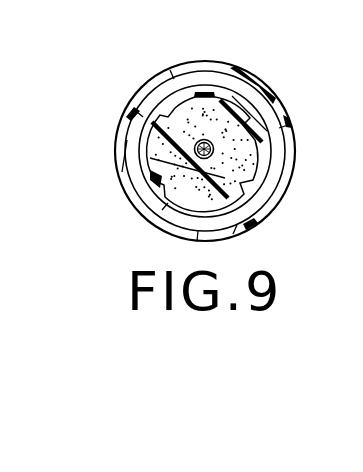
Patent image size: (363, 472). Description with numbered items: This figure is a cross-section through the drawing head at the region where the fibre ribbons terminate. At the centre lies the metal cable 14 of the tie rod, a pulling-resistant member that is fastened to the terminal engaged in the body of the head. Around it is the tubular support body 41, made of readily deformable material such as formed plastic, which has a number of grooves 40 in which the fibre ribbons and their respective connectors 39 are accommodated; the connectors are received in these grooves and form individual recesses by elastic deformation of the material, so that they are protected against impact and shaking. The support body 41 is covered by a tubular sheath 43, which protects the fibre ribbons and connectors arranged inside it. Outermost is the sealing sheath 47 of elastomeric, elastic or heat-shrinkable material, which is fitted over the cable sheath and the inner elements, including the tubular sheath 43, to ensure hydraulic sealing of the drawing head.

The metal cable 14 is at (213, 160).
The connector 39 is at (205, 93).
The groove 40 is at (257, 130).
The tubular support body 41 is at (150, 158).
The tubular sheath 43 is at (122, 117).
The outer sealing sheath 47 is at (303, 86).